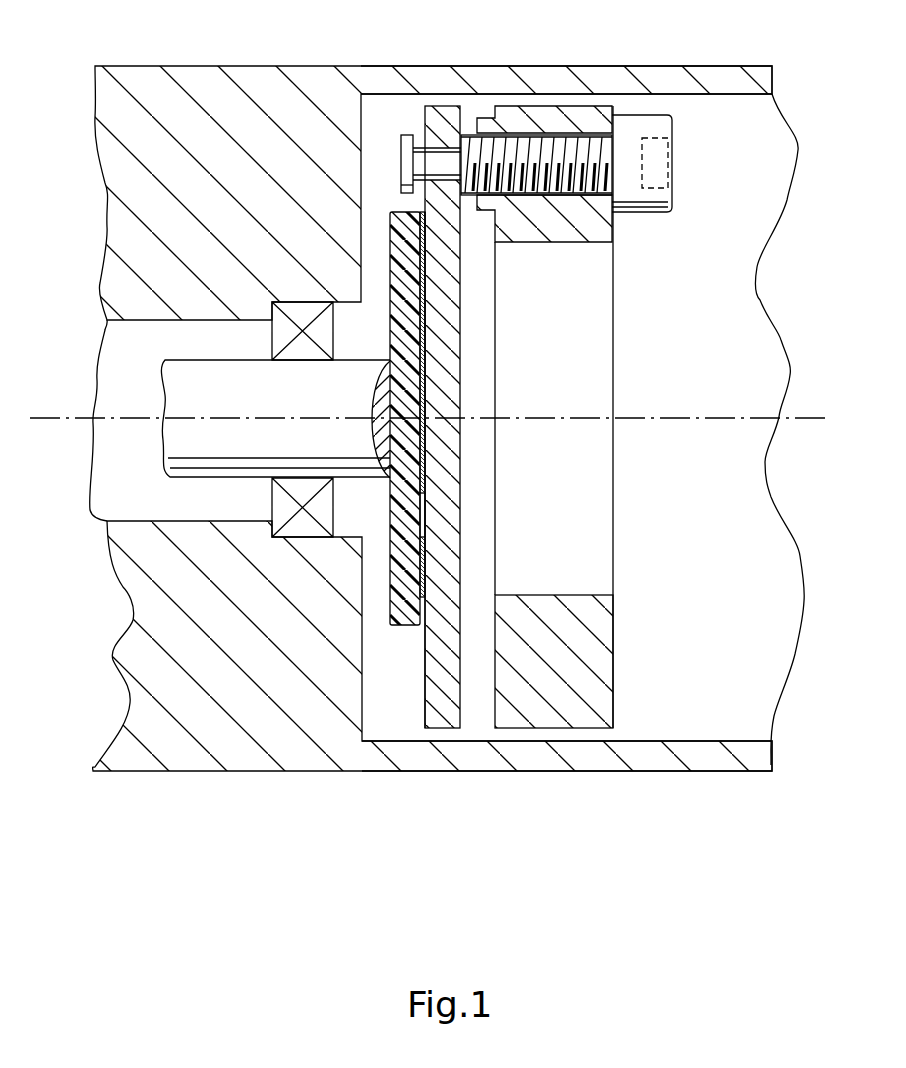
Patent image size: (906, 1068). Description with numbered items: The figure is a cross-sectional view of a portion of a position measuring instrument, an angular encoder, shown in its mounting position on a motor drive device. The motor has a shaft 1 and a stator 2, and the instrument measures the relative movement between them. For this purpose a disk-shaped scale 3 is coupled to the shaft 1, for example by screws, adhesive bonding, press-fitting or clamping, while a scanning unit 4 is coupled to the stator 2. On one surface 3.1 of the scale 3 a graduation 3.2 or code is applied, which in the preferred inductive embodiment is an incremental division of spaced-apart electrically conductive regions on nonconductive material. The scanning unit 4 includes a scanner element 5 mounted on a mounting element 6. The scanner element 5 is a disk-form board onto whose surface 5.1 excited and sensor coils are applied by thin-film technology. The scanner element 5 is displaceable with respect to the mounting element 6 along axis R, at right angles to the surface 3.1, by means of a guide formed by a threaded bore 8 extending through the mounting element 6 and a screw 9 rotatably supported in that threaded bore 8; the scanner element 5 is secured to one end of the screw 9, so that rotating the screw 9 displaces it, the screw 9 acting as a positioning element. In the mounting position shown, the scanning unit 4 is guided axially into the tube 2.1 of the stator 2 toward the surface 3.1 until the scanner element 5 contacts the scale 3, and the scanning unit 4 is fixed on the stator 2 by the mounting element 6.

The shaft 1 is at (175, 443).
The stator 2 is at (132, 238).
The tube 2.1 is at (733, 99).
The scale 3 is at (382, 605).
The surface 3.1 is at (428, 492).
The graduation 3.2 is at (422, 560).
The scanning unit 4 is at (481, 695).
The scanner element 5 is at (443, 713).
The surface 5.1 is at (422, 691).
The mounting element 6 is at (552, 715).
The threaded bore 8 is at (523, 133).
The screw 9 is at (543, 152).
The axis R is at (809, 416).